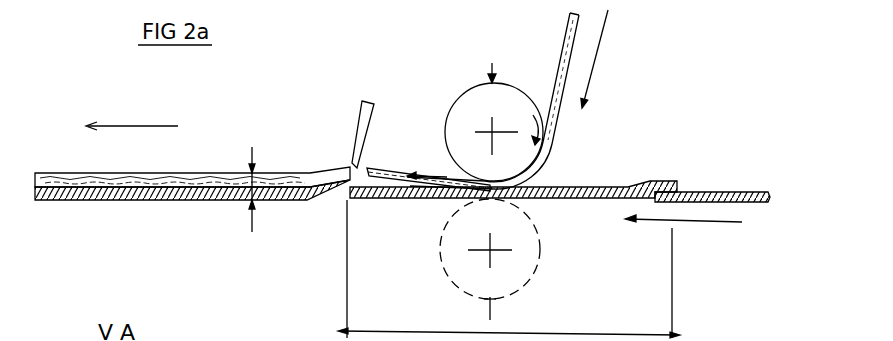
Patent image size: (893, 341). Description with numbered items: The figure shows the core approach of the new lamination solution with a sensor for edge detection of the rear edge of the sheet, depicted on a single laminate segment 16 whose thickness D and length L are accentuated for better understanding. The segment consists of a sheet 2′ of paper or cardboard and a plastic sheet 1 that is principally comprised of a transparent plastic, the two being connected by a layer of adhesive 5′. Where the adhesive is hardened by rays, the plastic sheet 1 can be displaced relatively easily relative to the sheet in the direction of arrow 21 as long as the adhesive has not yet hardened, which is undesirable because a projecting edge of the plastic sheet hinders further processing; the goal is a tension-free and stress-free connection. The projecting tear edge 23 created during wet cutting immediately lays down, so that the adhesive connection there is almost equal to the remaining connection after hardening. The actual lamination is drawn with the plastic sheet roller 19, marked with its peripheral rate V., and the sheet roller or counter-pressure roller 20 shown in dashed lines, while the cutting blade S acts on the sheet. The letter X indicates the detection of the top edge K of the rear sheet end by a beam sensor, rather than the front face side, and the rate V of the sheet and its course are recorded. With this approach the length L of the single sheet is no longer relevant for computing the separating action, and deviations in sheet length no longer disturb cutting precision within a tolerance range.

The plastic sheet 1 is at (570, 32).
The sheet 2′ is at (714, 214).
The layer of adhesive 5′ is at (558, 152).
The single laminate segment 16 is at (190, 196).
The plastic sheet roller 19 is at (475, 83).
The counter-pressure roller 20 is at (440, 273).
The arrow 21 is at (432, 169).
The projecting tear edge 23 is at (387, 164).
The cutting blade S is at (350, 134).
The edge K is at (671, 176).
The detection of the edge X is at (681, 175).
The thickness D is at (259, 189).
The length L is at (577, 333).
The web speed / direction V is at (691, 222).
The roller peripheral speed V. is at (523, 139).